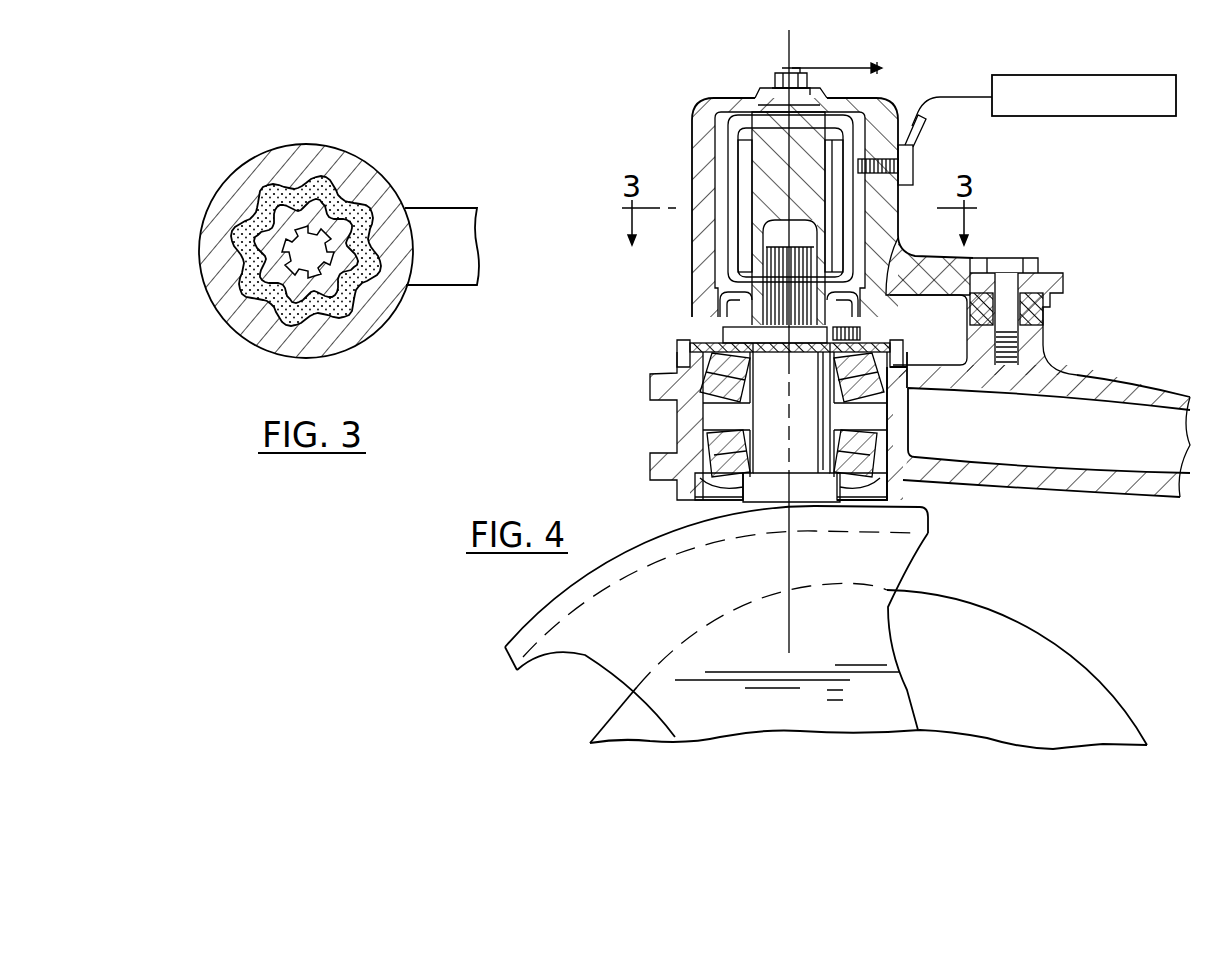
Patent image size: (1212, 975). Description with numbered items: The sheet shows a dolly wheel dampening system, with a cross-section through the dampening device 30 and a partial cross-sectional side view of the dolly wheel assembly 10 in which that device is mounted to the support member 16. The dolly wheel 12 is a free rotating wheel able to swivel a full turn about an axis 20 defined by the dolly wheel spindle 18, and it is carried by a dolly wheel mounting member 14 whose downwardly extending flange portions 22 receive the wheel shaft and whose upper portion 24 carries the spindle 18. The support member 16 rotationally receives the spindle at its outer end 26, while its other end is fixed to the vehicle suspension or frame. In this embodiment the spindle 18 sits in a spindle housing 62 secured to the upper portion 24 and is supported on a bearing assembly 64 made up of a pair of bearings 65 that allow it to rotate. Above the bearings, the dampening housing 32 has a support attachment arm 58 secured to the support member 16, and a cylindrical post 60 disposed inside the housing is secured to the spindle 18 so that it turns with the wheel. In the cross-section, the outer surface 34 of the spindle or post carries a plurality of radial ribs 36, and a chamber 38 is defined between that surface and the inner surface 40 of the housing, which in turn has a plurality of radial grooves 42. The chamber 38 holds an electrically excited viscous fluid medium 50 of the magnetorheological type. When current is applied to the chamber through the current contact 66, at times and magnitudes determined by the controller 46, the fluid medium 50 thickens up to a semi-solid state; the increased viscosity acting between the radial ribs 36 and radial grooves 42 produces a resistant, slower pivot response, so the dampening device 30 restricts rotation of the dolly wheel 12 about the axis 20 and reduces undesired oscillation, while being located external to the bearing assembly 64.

In FIG. 4, the dolly wheel assembly 10 is at (983, 165).
In FIG. 4, the dolly wheel 12 is at (1020, 632).
In FIG. 4, the dolly wheel mounting member 14 is at (873, 613).
In FIG. 4, the support member 16 is at (1108, 443).
In FIG. 4, the dolly wheel spindle 18 is at (758, 422).
In FIG. 4, the axis 20 is at (791, 57).
In FIG. 4, the flange portions 22 is at (657, 698).
In FIG. 4, the upper portion 24 is at (630, 550).
In FIG. 3, the outer end 26 is at (420, 260).
In FIG. 4, the outer end 26 is at (922, 447).
In FIG. 3, the dampening device 30 is at (288, 125).
In FIG. 4, the dampening device 30 is at (889, 76).
In FIG. 3, the dampening housing 32 is at (320, 155).
In FIG. 4, the dampening housing 32 is at (900, 118).
In FIG. 3, the outer surface 34 is at (333, 213).
In FIG. 3, the radial ribs 36 is at (317, 320).
In FIG. 4, the radial ribs 36 is at (738, 155).
In FIG. 3, the chamber 38 is at (264, 311).
In FIG. 4, the chamber 38 is at (850, 222).
In FIG. 3, the inner surface 40 is at (236, 250).
In FIG. 4, the inner surface 40 is at (720, 222).
In FIG. 3, the radial grooves 42 is at (262, 192).
In FIG. 4, the radial grooves 42 is at (722, 172).
In FIG. 4, the controller 46 is at (1080, 116).
In FIG. 3, the viscous fluid medium 50 is at (300, 346).
In FIG. 4, the support attachment arm 58 is at (947, 245).
In FIG. 4, the cylindrical post 60 is at (768, 106).
In FIG. 4, the spindle housing 62 is at (680, 360).
In FIG. 4, the bearing assembly 64 is at (734, 412).
In FIG. 4, the bearings 65 is at (873, 390).
In FIG. 4, the current contact 66 is at (915, 167).